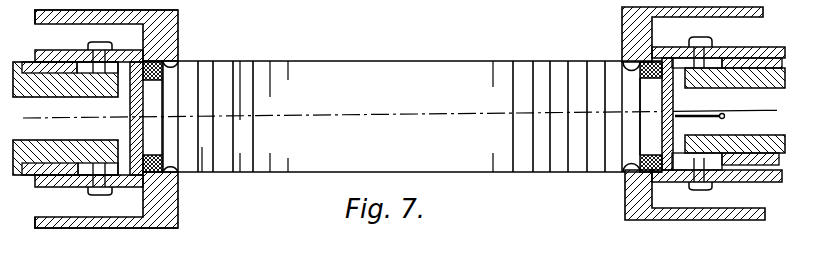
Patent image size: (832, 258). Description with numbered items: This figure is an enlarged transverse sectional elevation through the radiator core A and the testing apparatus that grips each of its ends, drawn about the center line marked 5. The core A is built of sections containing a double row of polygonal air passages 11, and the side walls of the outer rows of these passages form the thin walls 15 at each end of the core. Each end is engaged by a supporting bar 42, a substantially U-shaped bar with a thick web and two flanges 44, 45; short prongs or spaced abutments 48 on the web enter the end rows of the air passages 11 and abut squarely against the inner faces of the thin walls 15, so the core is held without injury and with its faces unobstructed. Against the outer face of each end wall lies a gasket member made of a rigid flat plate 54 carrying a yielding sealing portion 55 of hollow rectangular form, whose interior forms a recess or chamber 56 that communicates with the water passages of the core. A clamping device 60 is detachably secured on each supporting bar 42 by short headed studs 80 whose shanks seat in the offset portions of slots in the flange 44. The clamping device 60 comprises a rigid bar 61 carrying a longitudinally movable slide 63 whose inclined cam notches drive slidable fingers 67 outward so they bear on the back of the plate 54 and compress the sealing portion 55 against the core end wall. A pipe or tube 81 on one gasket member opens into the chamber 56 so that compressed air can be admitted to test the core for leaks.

The axis 5 is at (398, 115).
The polygonal air passages 11 is at (268, 163).
The thin walls 15 is at (163, 100).
The supporting bar 42 is at (179, 27).
The flange 44 is at (53, 58).
The flange 45 is at (38, 24).
The prongs or spaced abutments 48 is at (172, 63).
The flat plate 54 is at (140, 106).
The sealing portion 55 is at (163, 153).
The hollow recess or chamber 56 is at (150, 131).
The clamping device 60 is at (770, 53).
The rigid bar 61 is at (35, 183).
The slide 63 is at (49, 74).
The fingers or plates 67 is at (124, 62).
The headed studs 80 is at (98, 45).
The pipe or tube 81 is at (722, 118).
The core A is at (447, 44).